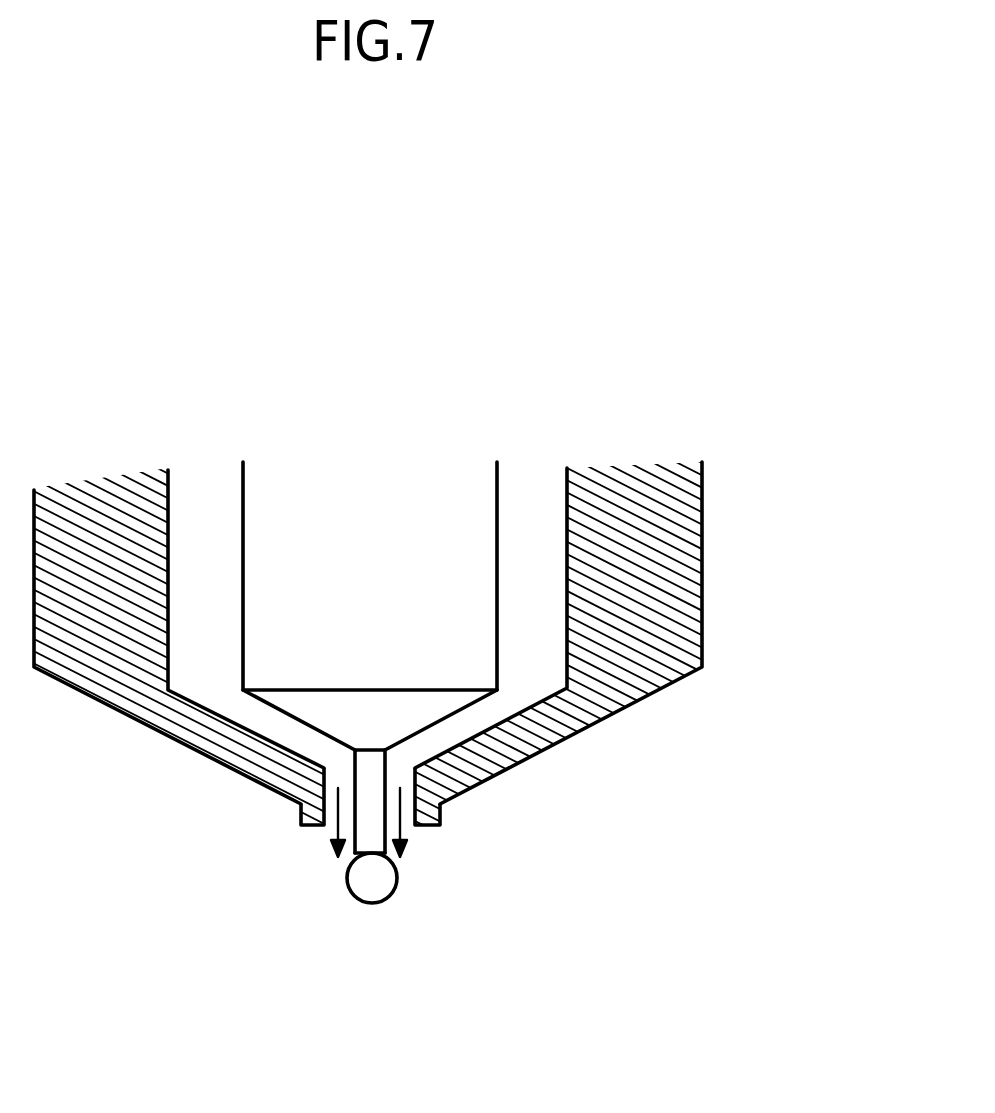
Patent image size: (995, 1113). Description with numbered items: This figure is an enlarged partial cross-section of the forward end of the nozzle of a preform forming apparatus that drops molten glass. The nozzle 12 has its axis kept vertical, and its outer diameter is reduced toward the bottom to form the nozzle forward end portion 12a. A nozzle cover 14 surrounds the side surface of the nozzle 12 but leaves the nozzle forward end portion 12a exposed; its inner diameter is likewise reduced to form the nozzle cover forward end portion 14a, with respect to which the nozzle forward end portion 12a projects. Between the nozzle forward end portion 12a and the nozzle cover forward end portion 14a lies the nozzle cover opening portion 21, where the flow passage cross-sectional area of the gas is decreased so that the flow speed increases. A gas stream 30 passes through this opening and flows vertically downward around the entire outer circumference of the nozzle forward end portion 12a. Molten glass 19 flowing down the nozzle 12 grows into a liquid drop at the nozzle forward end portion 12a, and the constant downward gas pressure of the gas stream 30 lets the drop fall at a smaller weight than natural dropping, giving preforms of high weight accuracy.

The nozzle 12 is at (463, 507).
The nozzle forward end portion 12a is at (373, 820).
The nozzle cover 14 is at (673, 565).
The nozzle cover forward end portion 14a is at (298, 812).
The molten glass 19 is at (373, 885).
The nozzle cover opening portion 21 is at (463, 793).
The gas stream 30 is at (330, 832).